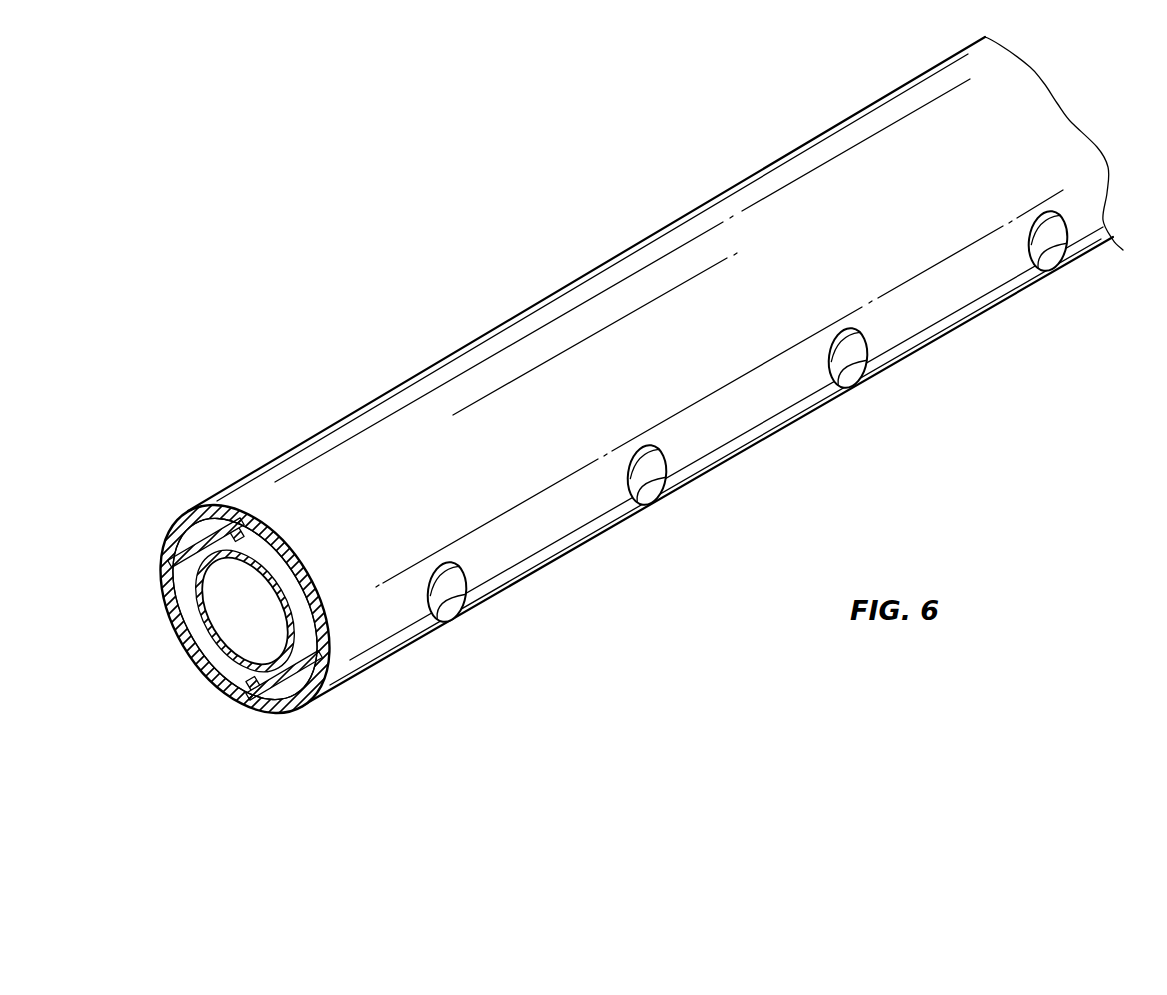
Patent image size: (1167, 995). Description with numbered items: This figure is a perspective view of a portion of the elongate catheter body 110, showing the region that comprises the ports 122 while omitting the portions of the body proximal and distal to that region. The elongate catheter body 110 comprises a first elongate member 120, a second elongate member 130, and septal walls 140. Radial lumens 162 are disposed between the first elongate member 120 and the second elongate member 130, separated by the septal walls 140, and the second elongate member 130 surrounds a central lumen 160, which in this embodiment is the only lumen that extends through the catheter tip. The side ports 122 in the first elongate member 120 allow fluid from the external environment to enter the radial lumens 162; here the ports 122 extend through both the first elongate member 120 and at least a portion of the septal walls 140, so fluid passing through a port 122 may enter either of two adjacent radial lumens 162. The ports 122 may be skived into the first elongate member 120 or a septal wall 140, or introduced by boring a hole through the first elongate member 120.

The elongate catheter body 110 is at (575, 401).
The first elongate member 120 is at (575, 391).
The side ports 122 is at (468, 598).
The second elongate member 130 is at (255, 635).
The septal walls 140 is at (186, 557).
The central lumen 160 is at (232, 657).
The radial lumens 162 is at (187, 527).